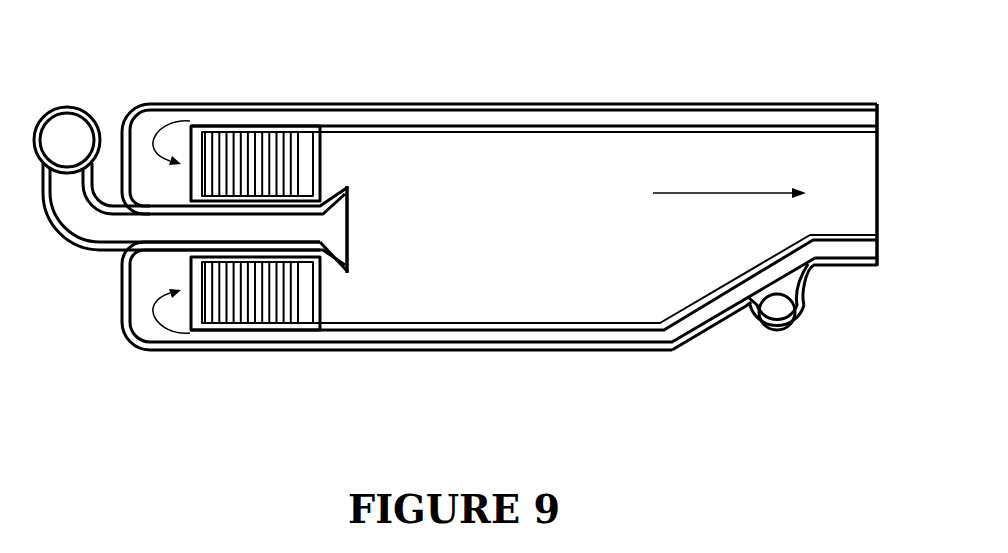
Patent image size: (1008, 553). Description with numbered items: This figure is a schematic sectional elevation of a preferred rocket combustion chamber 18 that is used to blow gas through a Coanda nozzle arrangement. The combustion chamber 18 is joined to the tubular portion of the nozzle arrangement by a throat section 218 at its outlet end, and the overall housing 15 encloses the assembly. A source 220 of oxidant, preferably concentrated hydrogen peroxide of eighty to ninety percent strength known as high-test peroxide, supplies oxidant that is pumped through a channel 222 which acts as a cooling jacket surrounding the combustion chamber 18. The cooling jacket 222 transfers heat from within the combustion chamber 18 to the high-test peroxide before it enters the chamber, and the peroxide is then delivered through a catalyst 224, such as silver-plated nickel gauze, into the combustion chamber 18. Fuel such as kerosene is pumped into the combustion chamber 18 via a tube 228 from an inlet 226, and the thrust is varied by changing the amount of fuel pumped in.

The exhaust housing 15 is at (613, 103).
The combustion chamber 18 is at (487, 158).
The throat section 218 is at (870, 103).
The source of oxidant 220 is at (775, 322).
The channel 222 is at (672, 120).
The catalyst 224 is at (269, 170).
The inlet pipe 226 is at (67, 130).
The tube 228 is at (208, 228).